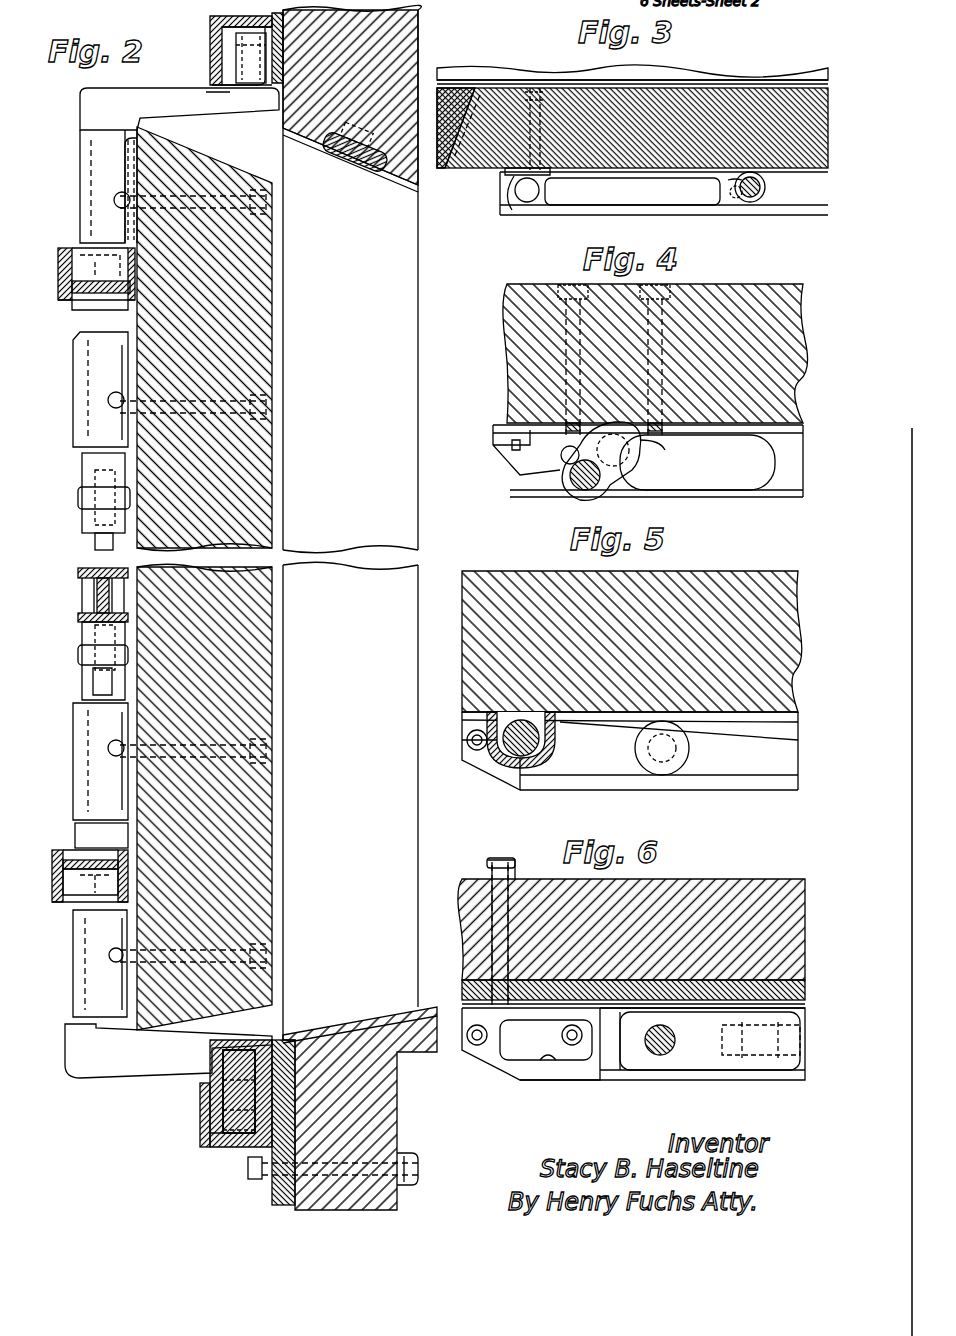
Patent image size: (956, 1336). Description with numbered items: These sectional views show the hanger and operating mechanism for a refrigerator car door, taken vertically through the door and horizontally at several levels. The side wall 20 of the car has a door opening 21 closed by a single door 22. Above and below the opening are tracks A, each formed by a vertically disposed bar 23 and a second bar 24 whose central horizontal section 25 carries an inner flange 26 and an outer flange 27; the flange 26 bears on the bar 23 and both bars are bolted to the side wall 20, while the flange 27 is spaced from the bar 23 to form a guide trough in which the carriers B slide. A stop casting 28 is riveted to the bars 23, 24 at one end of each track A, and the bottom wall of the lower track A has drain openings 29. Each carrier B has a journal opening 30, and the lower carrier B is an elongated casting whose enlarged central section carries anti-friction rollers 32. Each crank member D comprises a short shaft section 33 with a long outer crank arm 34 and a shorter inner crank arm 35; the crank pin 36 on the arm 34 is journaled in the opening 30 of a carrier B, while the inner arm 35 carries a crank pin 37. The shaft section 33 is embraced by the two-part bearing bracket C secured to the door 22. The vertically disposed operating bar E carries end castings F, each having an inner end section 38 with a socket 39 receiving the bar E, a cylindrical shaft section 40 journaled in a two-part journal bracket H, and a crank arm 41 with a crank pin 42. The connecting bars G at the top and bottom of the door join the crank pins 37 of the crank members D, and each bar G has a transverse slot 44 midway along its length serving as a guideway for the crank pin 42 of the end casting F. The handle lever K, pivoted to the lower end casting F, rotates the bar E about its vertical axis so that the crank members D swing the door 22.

In FIG. 2, the side wall 20 is at (418, 44).
In FIG. 3, the side wall 20 is at (455, 85).
In FIG. 2, the door opening 21 is at (408, 242).
In FIG. 3, the door opening 21 is at (485, 86).
In FIG. 2, the door 22 is at (185, 158).
In FIG. 3, the door 22 is at (682, 92).
In FIG. 4, the door 22 is at (745, 284).
In FIG. 5, the door 22 is at (632, 641).
In FIG. 6, the door 22 is at (631, 933).
In FIG. 2, the vertically disposed bar 23 is at (268, 1200).
In FIG. 2, the bar 24 is at (214, 38).
In FIG. 2, the central horizontal section 25 is at (235, 15).
In FIG. 2, the inner vertical flange 26 is at (250, 1182).
In FIG. 2, the outer vertical flange 27 is at (212, 55).
In FIG. 6, the stop casting 28 is at (492, 1052).
In FIG. 6, the drain opening 29 is at (620, 1050).
In FIG. 6, the journal opening 30 is at (655, 1056).
In FIG. 6, the anti-friction roller 32 is at (740, 1058).
In FIG. 2, the shaft section 33 is at (90, 188).
In FIG. 5, the shaft section 33 is at (510, 760).
In FIG. 2, the crank arm 34 is at (172, 88).
In FIG. 5, the crank arm 34 is at (605, 775).
In FIG. 4, the inner crank arm 35 is at (565, 478).
In FIG. 5, the crank pin 36 is at (664, 760).
In FIG. 6, the crank pin 36 is at (672, 1050).
In FIG. 4, the crank pin 37 is at (572, 484).
In FIG. 2, the inner end section 38 is at (92, 476).
In FIG. 2, the socket 39 is at (97, 512).
In FIG. 3, the cylindrical shaft section 40 is at (760, 195).
In FIG. 3, the crank arm 41 is at (725, 188).
In FIG. 3, the crank pin 42 is at (732, 200).
In FIG. 3, the slot 44 is at (748, 198).
In FIG. 2, the track A is at (215, 90).
In FIG. 4, the track A is at (785, 500).
In FIG. 6, the track A is at (782, 1080).
In FIG. 2, the carrier B is at (258, 83).
In FIG. 4, the carrier B is at (772, 490).
In FIG. 5, the carrier B is at (738, 785).
In FIG. 2, the combined supporting and journal bracket C is at (82, 160).
In FIG. 3, the combined supporting and journal bracket C is at (510, 188).
In FIG. 4, the combined supporting and journal bracket C is at (648, 458).
In FIG. 2, the crank member D is at (80, 103).
In FIG. 4, the crank member D is at (570, 495).
In FIG. 5, the crank member D is at (568, 780).
In FIG. 2, the operating shaft or bar E is at (92, 542).
In FIG. 2, the end casting F is at (84, 460).
In FIG. 2, the connecting rod or bar G is at (62, 305).
In FIG. 3, the connecting rod or bar G is at (550, 215).
In FIG. 5, the connecting rod or bar G is at (492, 762).
In FIG. 2, the journal bracket H is at (78, 390).
In FIG. 2, the operating handle lever K is at (80, 617).